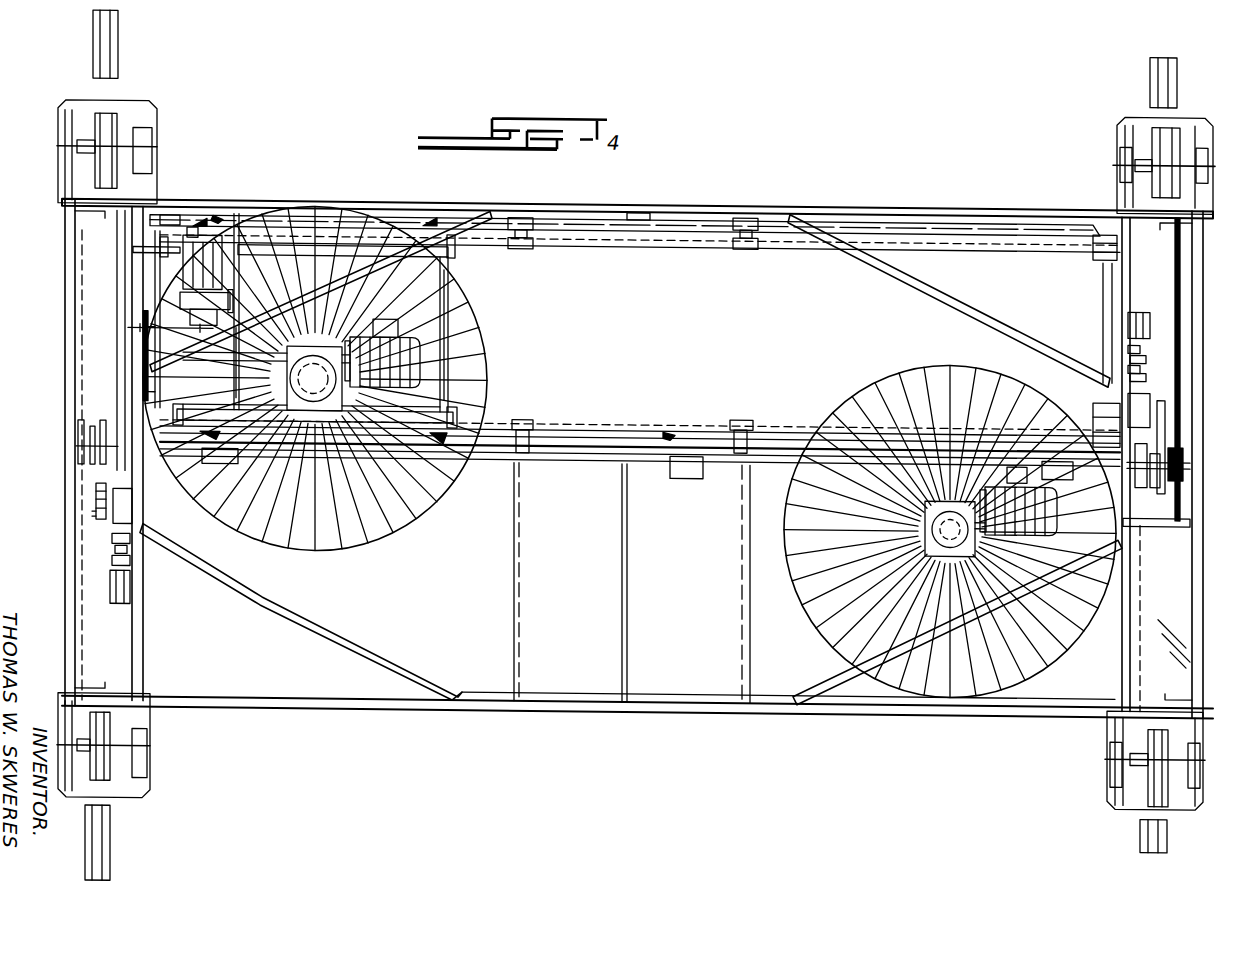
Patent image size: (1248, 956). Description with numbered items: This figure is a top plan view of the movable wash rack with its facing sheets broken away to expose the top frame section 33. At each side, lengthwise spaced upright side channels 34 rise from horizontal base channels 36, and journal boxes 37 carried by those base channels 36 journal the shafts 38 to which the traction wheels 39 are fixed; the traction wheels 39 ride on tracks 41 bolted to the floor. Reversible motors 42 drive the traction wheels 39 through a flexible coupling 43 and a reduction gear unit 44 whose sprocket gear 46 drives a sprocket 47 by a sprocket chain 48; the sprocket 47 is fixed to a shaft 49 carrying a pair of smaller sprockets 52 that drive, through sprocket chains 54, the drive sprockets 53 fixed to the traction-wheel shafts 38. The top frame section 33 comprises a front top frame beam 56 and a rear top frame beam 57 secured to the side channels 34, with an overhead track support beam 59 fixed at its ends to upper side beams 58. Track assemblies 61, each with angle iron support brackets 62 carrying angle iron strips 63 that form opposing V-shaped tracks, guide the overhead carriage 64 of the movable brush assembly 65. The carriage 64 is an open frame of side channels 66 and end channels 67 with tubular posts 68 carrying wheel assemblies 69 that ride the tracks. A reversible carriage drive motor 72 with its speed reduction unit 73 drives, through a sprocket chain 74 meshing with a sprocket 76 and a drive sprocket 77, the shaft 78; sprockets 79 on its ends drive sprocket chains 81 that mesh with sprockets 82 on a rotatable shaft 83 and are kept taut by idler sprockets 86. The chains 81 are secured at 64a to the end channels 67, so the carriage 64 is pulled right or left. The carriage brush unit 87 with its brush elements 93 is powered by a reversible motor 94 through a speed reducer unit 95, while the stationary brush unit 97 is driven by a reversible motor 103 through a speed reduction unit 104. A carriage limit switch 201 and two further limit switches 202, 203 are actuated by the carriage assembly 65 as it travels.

The top frame section 33 is at (772, 198).
The upright side channels 34 is at (100, 212).
The base channels 36 is at (66, 312).
The journal boxes 37 is at (1162, 135).
The shafts 38 is at (62, 150).
The traction wheels 39 is at (92, 107).
The tracks 41 is at (118, 62).
The motors 42 is at (118, 600).
The flexible coupling 43 is at (112, 549).
The reduction gear unit 44 is at (132, 510).
The sprocket gear 46 is at (97, 519).
The sprocket 47 is at (93, 474).
The sprocket chain 48 is at (100, 490).
The shaft 49 is at (82, 432).
The smaller sprockets 52 is at (88, 444).
The drive sprockets 53 is at (112, 145).
The sprocket chains 54 is at (80, 288).
The front top frame beam 56 is at (1066, 710).
The rear top frame beam 57 is at (960, 208).
The upper side beams 58 is at (140, 654).
The overhead track support beam 59 is at (776, 460).
The track assemblies 61 is at (218, 221).
The angle iron support brackets 62 is at (632, 583).
The angle iron strips 63 is at (905, 220).
The overhead carriage 64 is at (462, 345).
The chain securing points 64a is at (160, 253).
The movable brush assembly 65 is at (460, 276).
The side channels 66 is at (410, 255).
The end channels 67 is at (450, 306).
The tubular posts 68 is at (212, 262).
The wheel assemblies 69 is at (198, 226).
The carriage drive motor 72 is at (242, 272).
The speed reduction unit 73 is at (290, 368).
The sprocket chain 74 is at (160, 344).
The sprocket 76 is at (170, 346).
The drive sprocket 77 is at (150, 331).
The shaft 78 is at (143, 394).
The sprockets 79 is at (150, 243).
The drive sprocket chains 81 is at (660, 241).
The sprockets 82 is at (1103, 228).
The rotatable shaft 83 is at (1105, 292).
The idler sprockets 86 is at (522, 243).
The carriage brush unit 87 is at (398, 540).
The brush elements 93 is at (332, 461).
The reversible motor 94 is at (382, 330).
The speed reducer unit 95 is at (372, 447).
The stationary brush unit 97 is at (808, 640).
The reversible motor 103 is at (1040, 514).
The speed reduction unit 104 is at (935, 530).
The carriage limit switch 201 is at (1044, 440).
The limit switch 202 is at (692, 466).
The limit switch 203 is at (232, 468).